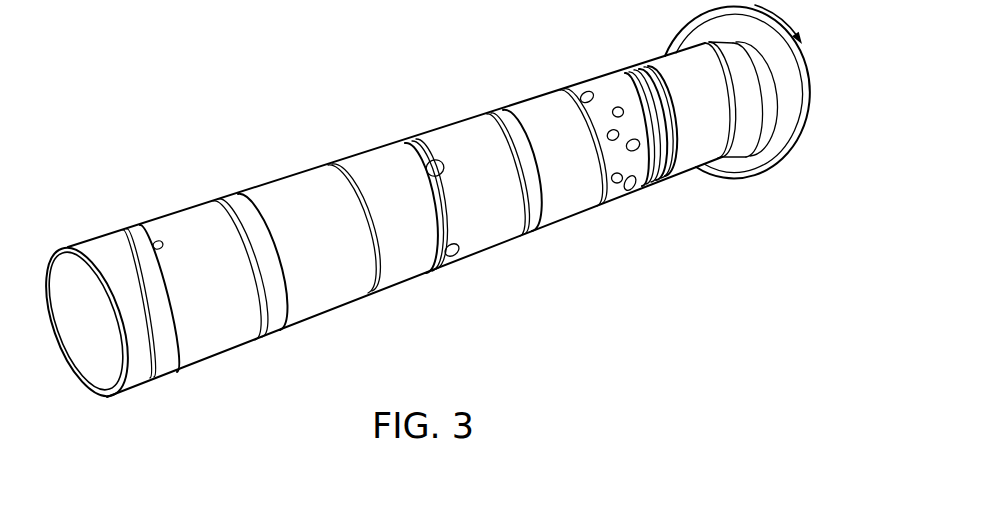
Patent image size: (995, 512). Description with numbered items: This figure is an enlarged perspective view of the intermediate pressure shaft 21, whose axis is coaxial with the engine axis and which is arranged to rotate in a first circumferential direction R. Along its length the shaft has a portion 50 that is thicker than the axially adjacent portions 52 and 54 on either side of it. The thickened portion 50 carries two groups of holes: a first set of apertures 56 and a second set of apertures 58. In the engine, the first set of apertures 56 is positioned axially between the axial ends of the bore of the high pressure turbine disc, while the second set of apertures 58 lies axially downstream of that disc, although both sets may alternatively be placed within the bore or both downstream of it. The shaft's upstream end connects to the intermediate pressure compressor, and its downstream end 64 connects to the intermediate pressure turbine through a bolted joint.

The intermediate pressure shaft 21 is at (358, 277).
The portion 50 is at (585, 178).
The portion 52 is at (561, 190).
The portion 54 is at (692, 140).
The first set of apertures 56 is at (572, 115).
The second set of apertures 58 is at (622, 72).
The downstream end 64 is at (788, 152).